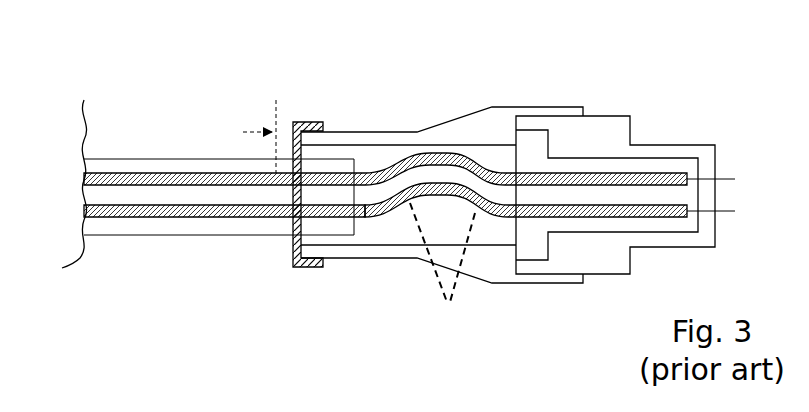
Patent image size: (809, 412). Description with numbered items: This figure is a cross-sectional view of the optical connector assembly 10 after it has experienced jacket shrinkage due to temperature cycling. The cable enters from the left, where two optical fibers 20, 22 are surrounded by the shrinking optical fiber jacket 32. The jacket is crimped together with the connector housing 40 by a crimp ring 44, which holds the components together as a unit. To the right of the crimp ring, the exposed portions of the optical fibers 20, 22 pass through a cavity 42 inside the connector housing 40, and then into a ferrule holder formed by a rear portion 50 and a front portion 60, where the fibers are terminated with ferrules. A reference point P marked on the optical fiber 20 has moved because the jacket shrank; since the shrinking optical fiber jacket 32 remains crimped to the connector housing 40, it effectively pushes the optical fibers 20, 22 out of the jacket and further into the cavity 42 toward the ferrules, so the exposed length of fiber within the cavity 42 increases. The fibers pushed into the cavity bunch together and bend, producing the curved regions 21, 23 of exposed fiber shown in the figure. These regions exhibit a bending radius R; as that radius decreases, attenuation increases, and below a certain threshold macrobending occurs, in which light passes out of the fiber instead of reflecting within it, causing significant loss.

The optical connector assembly 10 is at (279, 28).
The optical fiber 20 is at (222, 177).
The region of exposed fiber 21 is at (410, 152).
The optical fiber 22 is at (278, 217).
The region of exposed fiber 23 is at (383, 210).
The shrinking optical fiber jacket 32 is at (140, 163).
The connector housing 40 is at (452, 128).
The cavity 42 is at (485, 238).
The crimp ring 44 is at (305, 122).
The rear portion of ferrule holder 50 is at (535, 138).
The front portion of ferrule holder 60 is at (607, 127).